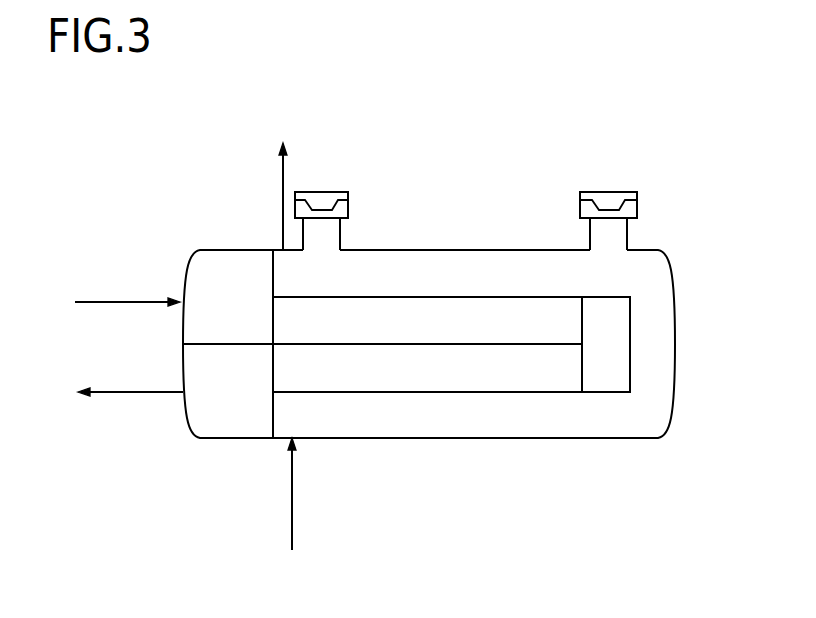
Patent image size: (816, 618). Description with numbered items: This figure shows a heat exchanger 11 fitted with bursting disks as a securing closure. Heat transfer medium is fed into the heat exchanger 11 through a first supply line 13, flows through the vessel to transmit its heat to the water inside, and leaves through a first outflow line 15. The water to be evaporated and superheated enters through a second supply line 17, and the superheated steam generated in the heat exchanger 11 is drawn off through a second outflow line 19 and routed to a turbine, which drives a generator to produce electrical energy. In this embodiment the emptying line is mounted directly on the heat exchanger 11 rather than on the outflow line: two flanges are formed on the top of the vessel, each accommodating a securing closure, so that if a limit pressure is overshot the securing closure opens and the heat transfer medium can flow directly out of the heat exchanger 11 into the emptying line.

The heat exchanger 11 is at (577, 440).
The first supply line 13 is at (298, 516).
The first outflow line 15 is at (280, 196).
The second supply line 17 is at (135, 298).
The second outflow line 19 is at (128, 395).